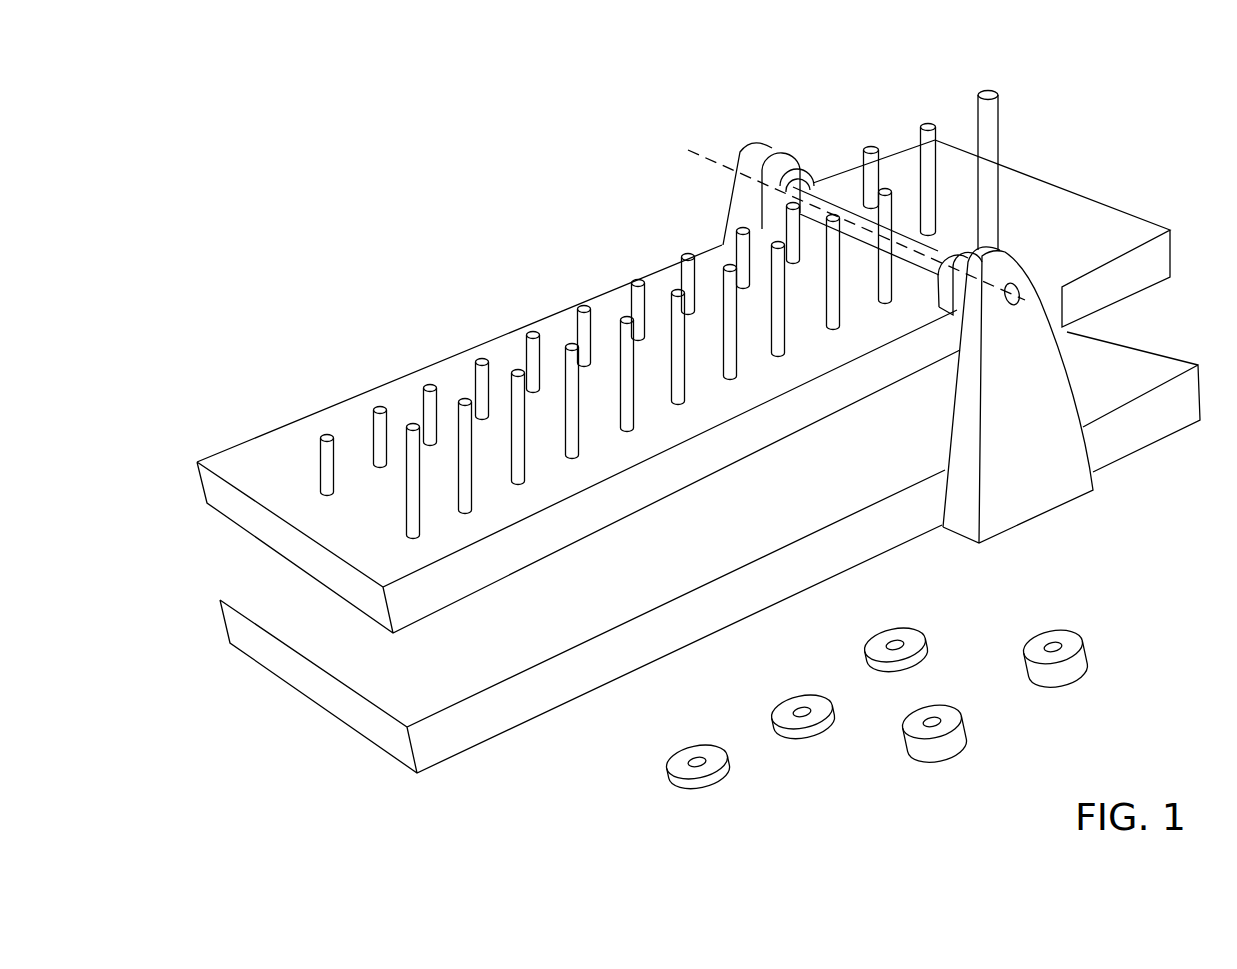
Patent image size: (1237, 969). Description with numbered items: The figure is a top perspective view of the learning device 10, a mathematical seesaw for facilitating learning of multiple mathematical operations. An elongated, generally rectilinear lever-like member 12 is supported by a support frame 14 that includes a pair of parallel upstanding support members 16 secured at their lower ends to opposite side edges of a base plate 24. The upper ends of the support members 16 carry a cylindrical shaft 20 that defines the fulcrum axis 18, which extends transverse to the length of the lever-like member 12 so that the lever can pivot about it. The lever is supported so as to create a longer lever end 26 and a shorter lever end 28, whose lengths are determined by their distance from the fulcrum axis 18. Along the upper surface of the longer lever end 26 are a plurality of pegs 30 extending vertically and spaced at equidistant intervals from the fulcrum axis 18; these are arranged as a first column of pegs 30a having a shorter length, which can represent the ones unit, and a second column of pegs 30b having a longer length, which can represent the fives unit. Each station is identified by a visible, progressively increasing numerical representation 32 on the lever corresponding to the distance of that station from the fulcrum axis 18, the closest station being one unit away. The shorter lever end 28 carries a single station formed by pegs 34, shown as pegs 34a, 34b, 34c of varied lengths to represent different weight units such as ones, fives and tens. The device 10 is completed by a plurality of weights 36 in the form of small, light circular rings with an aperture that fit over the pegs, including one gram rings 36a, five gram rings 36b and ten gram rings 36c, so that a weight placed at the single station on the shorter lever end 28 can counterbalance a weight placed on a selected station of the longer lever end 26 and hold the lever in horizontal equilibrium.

The learning device 10 is at (280, 247).
The lever-like member 12 is at (578, 386).
The support frame 14 is at (710, 552).
The upstanding support members 16 is at (762, 168).
The fulcrum axis 18 is at (704, 150).
The cylindrical shaft 20 is at (818, 182).
The base plate 24 is at (484, 713).
The longer lever end 26 is at (328, 418).
The shorter lever end 28 is at (1108, 215).
The pegs 30 is at (606, 364).
The first column of pegs 30a is at (585, 303).
The second column of pegs 30b is at (733, 360).
The numerical representation 32 is at (866, 354).
The pegs 34 is at (911, 132).
The peg 34a is at (871, 148).
The peg 34b is at (928, 125).
The peg 34c is at (988, 93).
The weights 36 is at (929, 696).
The 1 gram rings 36a is at (922, 630).
The 5 gram rings 36b is at (958, 742).
The 10 gram rings 36c is at (1080, 668).